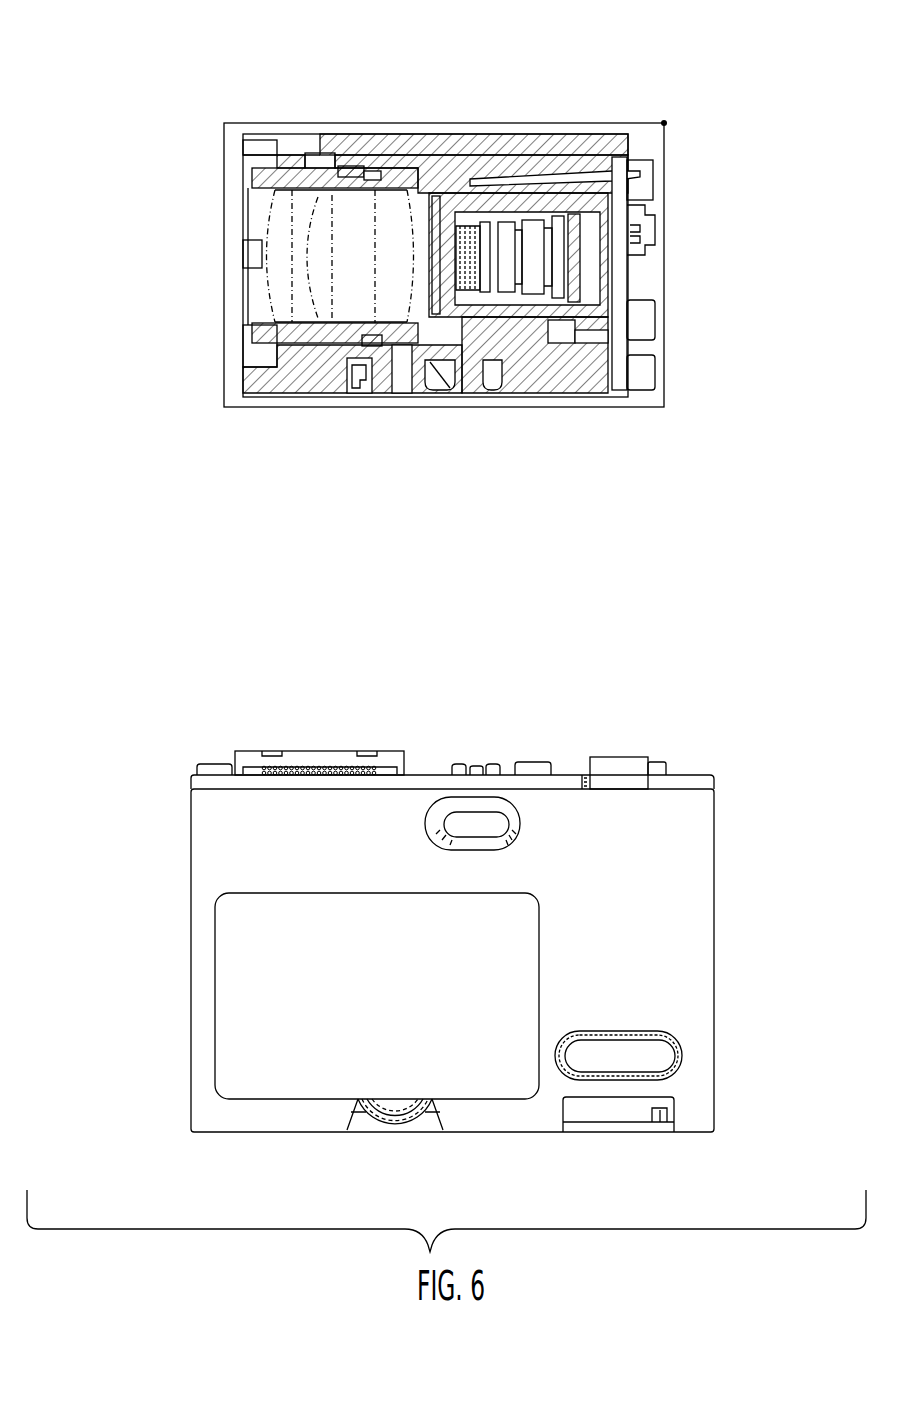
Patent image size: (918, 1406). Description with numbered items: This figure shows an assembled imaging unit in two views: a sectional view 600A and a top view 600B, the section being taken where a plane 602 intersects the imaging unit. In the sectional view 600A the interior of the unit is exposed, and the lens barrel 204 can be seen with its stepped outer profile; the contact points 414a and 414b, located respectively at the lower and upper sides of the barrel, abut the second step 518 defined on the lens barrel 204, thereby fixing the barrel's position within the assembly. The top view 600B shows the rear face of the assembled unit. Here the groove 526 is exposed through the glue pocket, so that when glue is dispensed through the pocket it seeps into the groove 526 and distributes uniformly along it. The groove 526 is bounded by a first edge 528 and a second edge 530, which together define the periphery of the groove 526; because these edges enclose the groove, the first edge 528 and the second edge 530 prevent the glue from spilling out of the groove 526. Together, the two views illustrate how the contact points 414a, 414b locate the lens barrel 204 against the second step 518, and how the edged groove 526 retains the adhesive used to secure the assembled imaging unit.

The sectional view 600A is at (253, 76).
The plane 602 is at (666, 262).
The lens barrel 204 is at (180, 201).
The second step 518 is at (348, 165).
The contact point 414b is at (376, 172).
The contact point 414a is at (375, 340).
The top view 600B is at (295, 682).
The first edge 528 is at (640, 1046).
The second edge 530 is at (568, 1062).
The groove 526 is at (592, 1052).